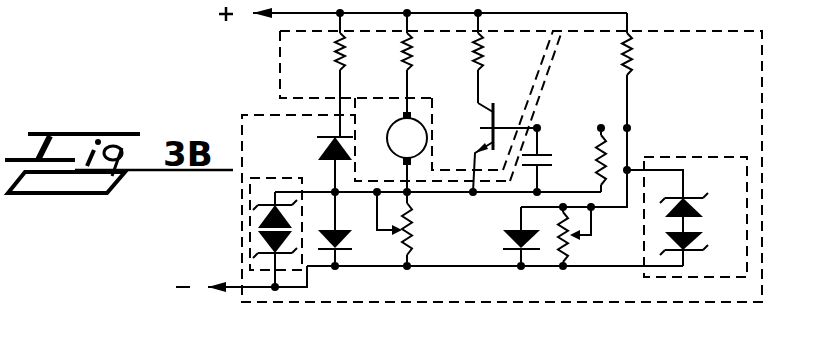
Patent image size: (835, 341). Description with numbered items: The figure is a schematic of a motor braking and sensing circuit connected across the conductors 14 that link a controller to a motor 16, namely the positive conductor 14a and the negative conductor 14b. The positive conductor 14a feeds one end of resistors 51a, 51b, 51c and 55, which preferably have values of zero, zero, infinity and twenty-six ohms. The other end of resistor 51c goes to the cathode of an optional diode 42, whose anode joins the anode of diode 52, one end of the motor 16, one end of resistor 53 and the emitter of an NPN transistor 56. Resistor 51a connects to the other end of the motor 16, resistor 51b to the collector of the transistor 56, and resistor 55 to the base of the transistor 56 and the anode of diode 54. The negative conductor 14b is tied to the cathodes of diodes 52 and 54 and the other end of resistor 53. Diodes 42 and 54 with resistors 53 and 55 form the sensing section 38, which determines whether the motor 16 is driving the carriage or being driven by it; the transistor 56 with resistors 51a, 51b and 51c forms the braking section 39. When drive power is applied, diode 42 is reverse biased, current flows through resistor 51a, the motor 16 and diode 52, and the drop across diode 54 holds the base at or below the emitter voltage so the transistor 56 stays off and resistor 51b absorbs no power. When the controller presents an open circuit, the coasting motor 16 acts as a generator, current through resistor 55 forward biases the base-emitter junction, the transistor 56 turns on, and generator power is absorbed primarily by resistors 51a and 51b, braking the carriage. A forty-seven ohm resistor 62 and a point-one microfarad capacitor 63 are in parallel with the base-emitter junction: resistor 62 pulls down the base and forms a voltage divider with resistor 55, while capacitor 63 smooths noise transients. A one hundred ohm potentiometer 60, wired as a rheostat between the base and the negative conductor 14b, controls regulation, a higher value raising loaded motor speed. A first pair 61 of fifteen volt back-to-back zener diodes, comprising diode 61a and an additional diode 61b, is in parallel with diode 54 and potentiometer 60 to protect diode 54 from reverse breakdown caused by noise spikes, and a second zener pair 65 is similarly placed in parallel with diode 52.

The conductors 14 is at (440, 177).
The positive conductor 14a is at (325, 12).
The negative conductor 14b is at (231, 286).
The motor 16 is at (392, 126).
The sensing section 38 is at (702, 30).
The braking section 39 is at (280, 60).
The diode 42 is at (318, 152).
The resistor 51a is at (403, 52).
The resistor 51b is at (473, 54).
The resistor 51c is at (336, 54).
The diode 52 is at (362, 228).
The resistor 53 is at (412, 244).
The diode 54 is at (507, 228).
The resistor 55 is at (632, 49).
The NPN transistor 56 is at (481, 128).
The potentiometer 60 is at (569, 256).
The first pair of zener diodes 61 is at (687, 206).
The zener diode 61a is at (704, 236).
The zener diode 61b is at (704, 200).
The resistor 62 is at (597, 150).
The capacitor 63 is at (541, 164).
The second zener diode pair 65 is at (293, 177).